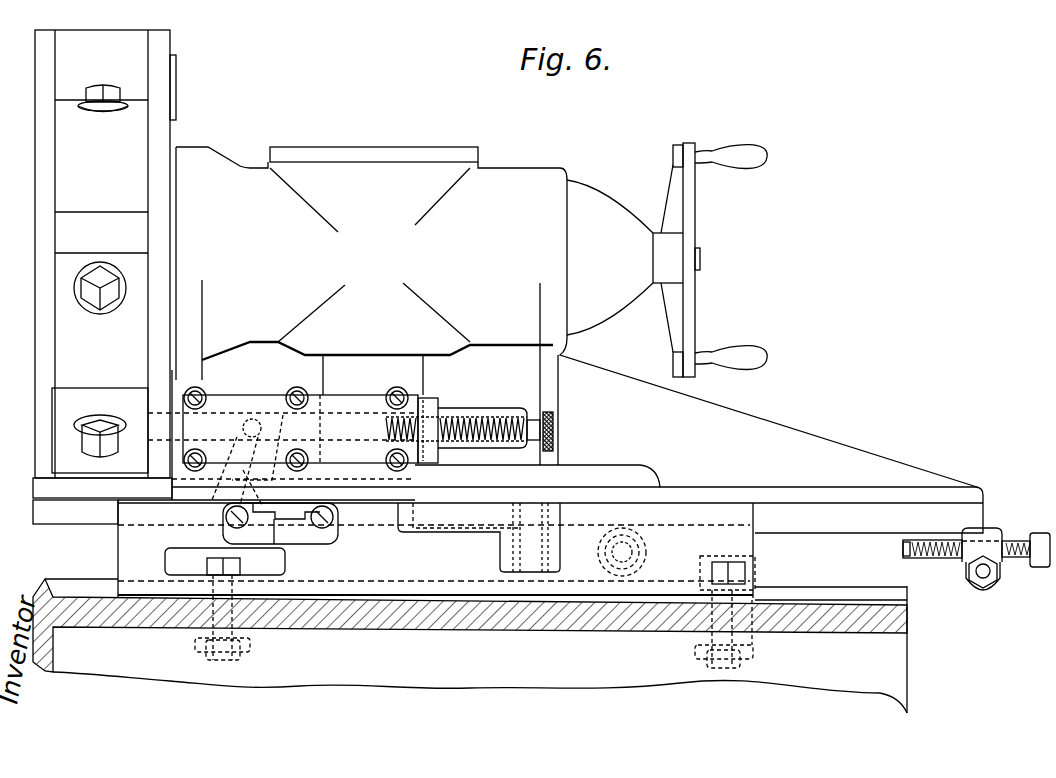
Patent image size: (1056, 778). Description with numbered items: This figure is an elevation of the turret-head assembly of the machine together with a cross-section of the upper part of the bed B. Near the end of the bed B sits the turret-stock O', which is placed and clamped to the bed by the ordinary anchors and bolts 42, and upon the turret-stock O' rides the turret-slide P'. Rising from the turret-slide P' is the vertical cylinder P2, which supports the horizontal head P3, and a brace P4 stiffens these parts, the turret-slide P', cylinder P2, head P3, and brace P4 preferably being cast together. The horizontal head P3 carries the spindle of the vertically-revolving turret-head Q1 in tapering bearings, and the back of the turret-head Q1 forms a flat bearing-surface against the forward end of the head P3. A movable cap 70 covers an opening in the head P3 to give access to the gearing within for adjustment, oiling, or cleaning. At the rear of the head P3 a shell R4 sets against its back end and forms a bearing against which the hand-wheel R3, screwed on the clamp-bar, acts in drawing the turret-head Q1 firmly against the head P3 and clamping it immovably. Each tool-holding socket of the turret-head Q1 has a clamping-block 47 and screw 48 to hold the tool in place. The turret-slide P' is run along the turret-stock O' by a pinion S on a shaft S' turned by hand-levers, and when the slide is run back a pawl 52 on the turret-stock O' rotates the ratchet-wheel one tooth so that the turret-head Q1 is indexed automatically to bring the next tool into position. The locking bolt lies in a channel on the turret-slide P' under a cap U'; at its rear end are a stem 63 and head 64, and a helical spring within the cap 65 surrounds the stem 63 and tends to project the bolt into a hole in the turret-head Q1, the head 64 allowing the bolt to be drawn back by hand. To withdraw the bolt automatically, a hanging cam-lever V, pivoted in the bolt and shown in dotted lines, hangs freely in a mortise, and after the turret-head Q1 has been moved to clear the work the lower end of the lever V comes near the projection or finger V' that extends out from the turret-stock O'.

The anchors and bolts 42 is at (774, 665).
The clamping-block 47 is at (108, 268).
The screw 48 is at (118, 90).
The pawl 52 is at (466, 515).
The stem 63 is at (490, 412).
The head 64 is at (554, 426).
The cap 65 is at (449, 410).
The movable cap 70 is at (368, 138).
The bed B is at (470, 646).
The turret-stock O' is at (512, 550).
The turret-slide P' is at (508, 435).
The vertical cylinder P2 is at (373, 375).
The horizontal head P3 is at (371, 263).
The brace P4 is at (377, 372).
The turret-head Q1 is at (104, 264).
The hand-wheel R3 is at (714, 260).
The shell R4 is at (625, 257).
The pinion S is at (634, 552).
The shaft S' is at (621, 554).
The cap U' is at (283, 435).
The hanging cam-lever V is at (247, 460).
The projection or finger V' is at (280, 523).